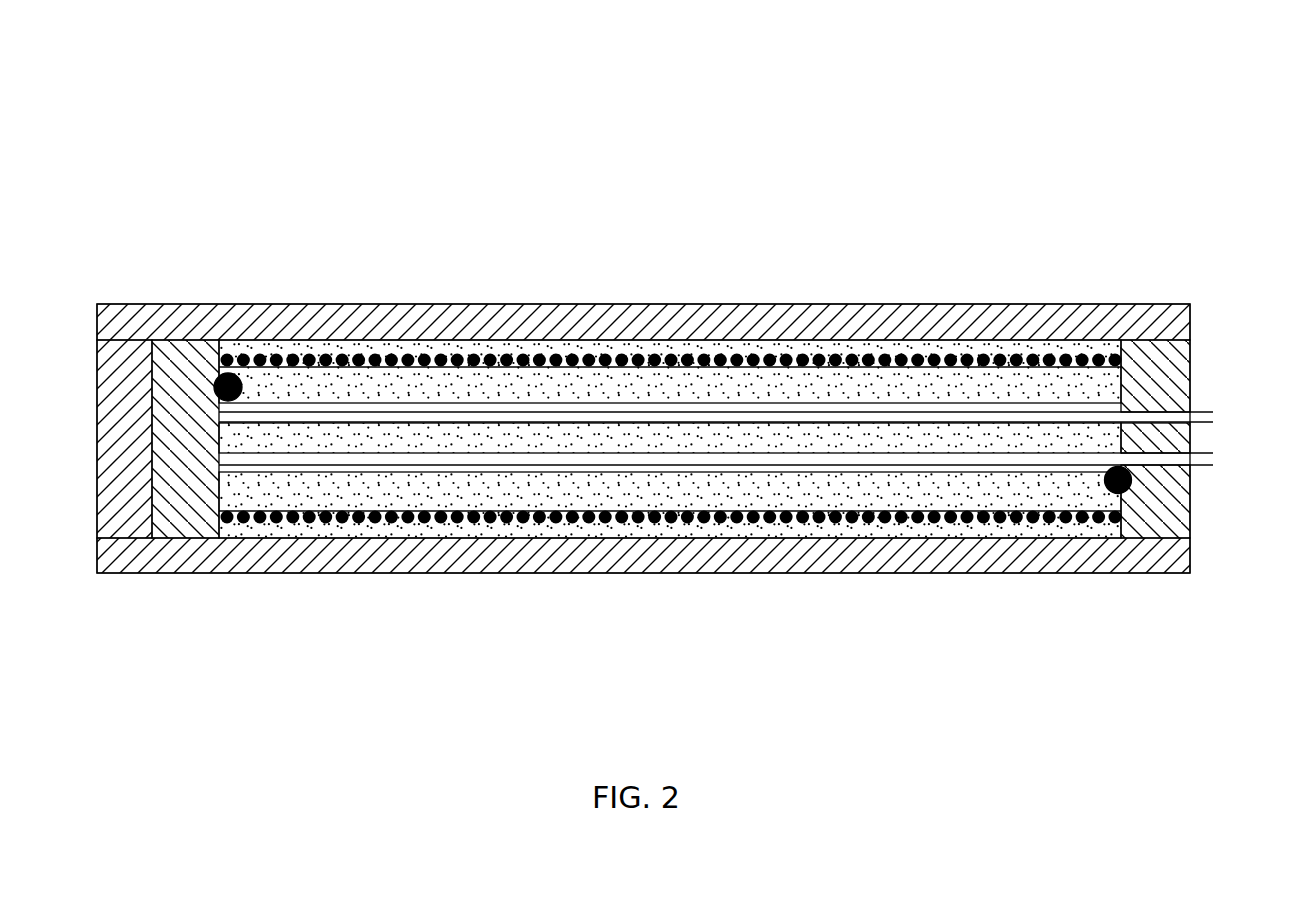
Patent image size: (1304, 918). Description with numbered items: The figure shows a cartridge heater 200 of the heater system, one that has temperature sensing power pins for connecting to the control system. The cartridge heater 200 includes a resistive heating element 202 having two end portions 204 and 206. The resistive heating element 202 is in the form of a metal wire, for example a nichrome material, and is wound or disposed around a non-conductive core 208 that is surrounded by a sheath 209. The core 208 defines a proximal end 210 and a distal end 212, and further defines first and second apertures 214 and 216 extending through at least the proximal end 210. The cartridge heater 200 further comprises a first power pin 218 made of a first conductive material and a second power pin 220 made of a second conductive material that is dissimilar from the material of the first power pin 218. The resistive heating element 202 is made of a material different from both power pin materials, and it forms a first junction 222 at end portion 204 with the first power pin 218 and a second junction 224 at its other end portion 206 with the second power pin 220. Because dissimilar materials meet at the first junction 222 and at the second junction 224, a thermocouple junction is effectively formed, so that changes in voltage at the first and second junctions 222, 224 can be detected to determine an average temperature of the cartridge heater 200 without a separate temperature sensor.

The cartridge heater 200 is at (1030, 142).
The resistive heating element 202 is at (438, 358).
The end portion 204 is at (1090, 530).
The end portion 206 is at (223, 335).
The core 208 is at (365, 382).
The sheath 209 is at (325, 325).
The proximal end 210 is at (1167, 292).
The distal end 212 is at (123, 588).
The first aperture 214 is at (642, 412).
The second aperture 216 is at (855, 477).
The first power pin 218 is at (1010, 460).
The second power pin 220 is at (767, 420).
The first junction 222 is at (1130, 478).
The second junction 224 is at (230, 375).